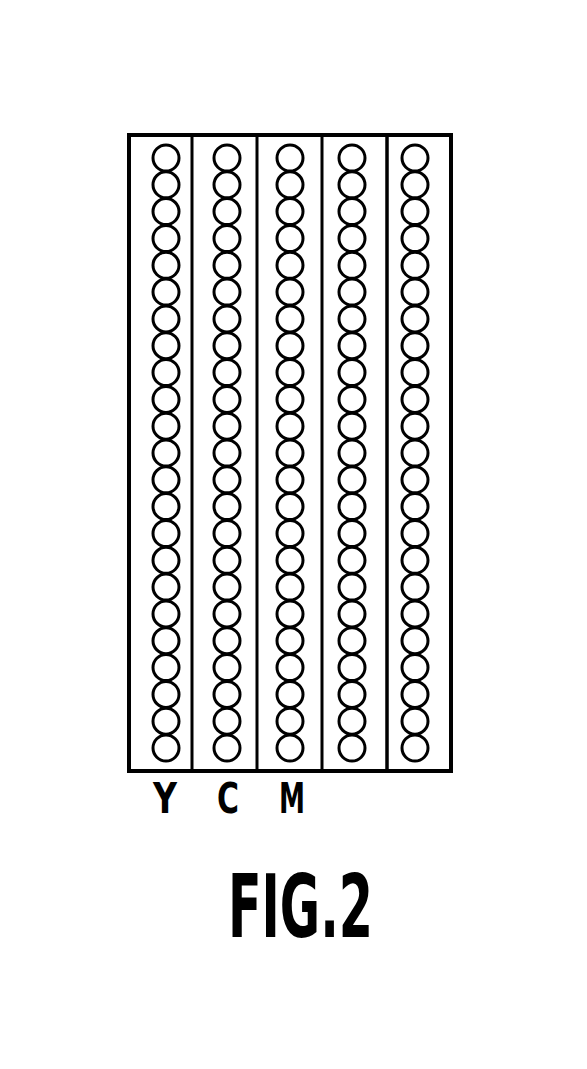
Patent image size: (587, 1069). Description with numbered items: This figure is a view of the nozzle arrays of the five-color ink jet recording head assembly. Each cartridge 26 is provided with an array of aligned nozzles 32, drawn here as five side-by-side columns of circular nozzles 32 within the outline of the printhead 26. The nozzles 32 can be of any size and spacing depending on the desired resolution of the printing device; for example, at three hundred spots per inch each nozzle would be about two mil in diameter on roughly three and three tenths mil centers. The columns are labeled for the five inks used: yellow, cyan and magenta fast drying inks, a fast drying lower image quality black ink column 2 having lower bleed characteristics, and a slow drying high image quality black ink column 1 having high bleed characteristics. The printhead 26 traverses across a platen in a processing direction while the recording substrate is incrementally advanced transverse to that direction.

The cartridge 26 is at (160, 137).
The nozzles 32 is at (220, 340).
The second black ink column K2 2 is at (354, 484).
The first black ink column K1 1 is at (419, 484).